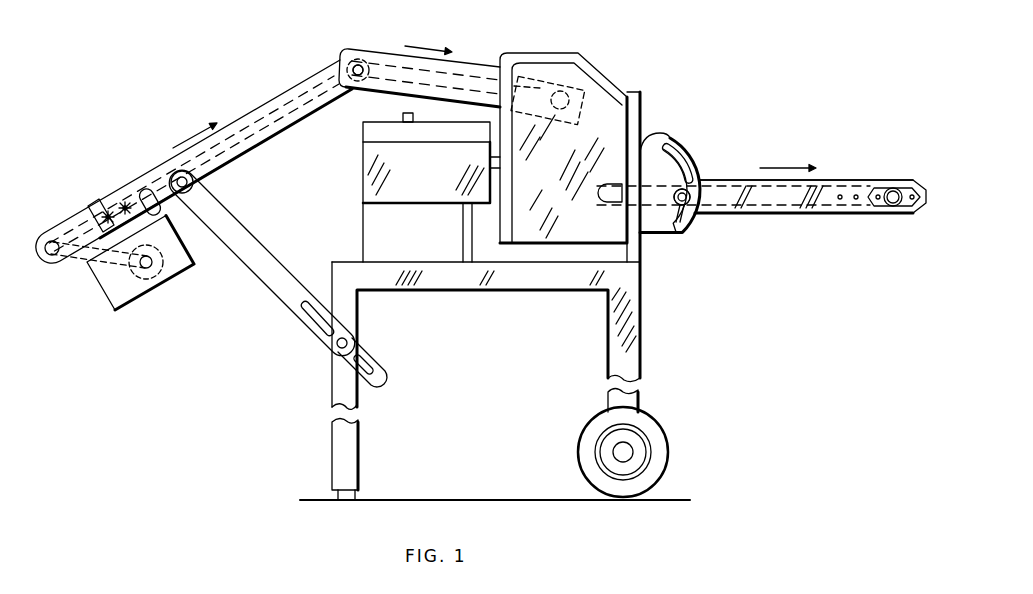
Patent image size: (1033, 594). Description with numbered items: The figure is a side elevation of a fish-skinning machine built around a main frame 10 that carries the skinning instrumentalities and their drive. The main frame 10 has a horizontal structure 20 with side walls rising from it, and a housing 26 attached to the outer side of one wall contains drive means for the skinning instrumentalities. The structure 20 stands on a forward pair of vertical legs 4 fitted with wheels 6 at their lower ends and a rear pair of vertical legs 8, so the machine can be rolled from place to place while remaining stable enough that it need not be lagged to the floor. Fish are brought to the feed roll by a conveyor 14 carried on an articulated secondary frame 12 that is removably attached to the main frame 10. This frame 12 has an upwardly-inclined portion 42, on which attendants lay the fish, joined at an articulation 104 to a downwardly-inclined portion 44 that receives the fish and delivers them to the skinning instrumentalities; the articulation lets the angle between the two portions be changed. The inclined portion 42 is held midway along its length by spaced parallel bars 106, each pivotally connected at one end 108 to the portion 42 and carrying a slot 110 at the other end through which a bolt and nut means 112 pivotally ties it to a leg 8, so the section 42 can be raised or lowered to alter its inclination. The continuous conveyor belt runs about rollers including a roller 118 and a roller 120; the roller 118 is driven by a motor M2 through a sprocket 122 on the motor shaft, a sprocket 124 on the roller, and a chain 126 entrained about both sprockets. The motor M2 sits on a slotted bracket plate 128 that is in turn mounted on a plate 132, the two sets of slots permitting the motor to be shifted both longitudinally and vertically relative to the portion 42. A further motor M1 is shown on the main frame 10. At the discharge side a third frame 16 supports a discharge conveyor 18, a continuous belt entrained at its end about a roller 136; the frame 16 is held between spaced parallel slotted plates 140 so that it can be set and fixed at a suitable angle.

The vertical leg 4 is at (632, 368).
The wheel 6 is at (660, 447).
The vertical leg 8 is at (342, 383).
The main frame 10 is at (656, 337).
The secondary frame 12 is at (228, 176).
The conveyor 14 is at (172, 146).
The third frame 16 is at (814, 228).
The discharge conveyor 18 is at (840, 168).
The horizontal structure 20 is at (478, 283).
The housing 26 is at (615, 108).
The upwardly-inclined portion 42 is at (254, 90).
The downwardly-inclined portion 44 is at (390, 53).
The articulation 104 is at (352, 70).
The bar 106 is at (242, 242).
The pivotal connection 108 is at (190, 183).
The slot 110 is at (370, 367).
The bolt and nut means 112 is at (336, 346).
The roller 118 is at (63, 264).
The roller 120 is at (359, 58).
The sprocket 122 is at (167, 278).
The sprocket 124 is at (70, 270).
The chain 126 is at (112, 272).
The bracket plate 128 is at (108, 200).
The plate 132 is at (96, 208).
The roller 136 is at (893, 188).
The plate 140 is at (698, 168).
The motor M1 is at (428, 180).
The motor M2 is at (127, 293).